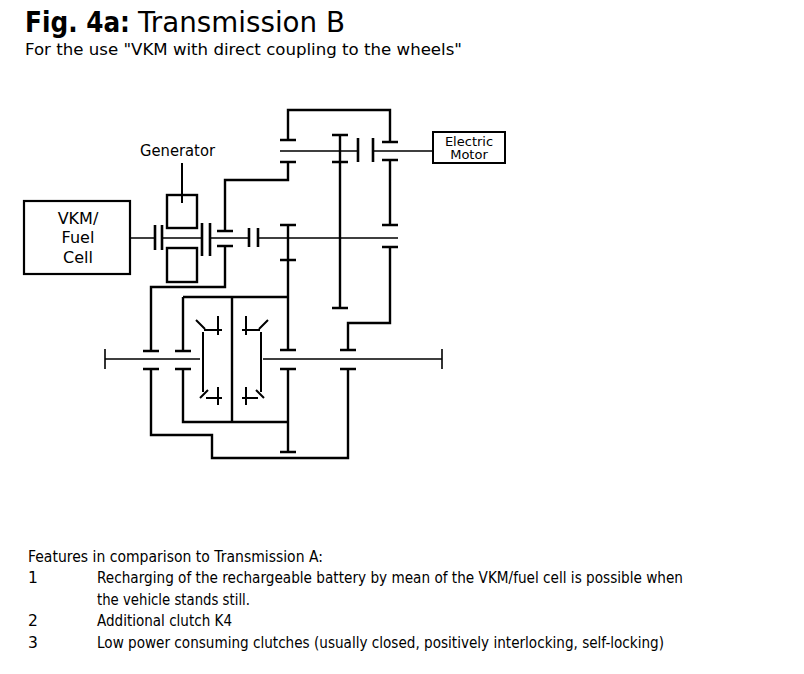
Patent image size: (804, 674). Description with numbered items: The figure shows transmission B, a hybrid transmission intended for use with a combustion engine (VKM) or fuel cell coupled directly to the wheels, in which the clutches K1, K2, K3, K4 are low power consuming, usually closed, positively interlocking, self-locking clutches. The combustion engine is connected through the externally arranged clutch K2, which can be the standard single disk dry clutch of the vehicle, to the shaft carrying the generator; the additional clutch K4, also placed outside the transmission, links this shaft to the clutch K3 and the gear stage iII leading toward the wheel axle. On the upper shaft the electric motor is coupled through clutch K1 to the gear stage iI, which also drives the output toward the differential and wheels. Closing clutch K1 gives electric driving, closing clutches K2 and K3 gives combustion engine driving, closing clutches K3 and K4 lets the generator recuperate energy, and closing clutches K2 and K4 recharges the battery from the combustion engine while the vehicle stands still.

The clutch K1 is at (370, 139).
The clutch K2 is at (149, 223).
The clutch K3 is at (253, 222).
The clutch K4 is at (214, 226).
The gear ratio i_I iI is at (352, 175).
The gear ratio i_II iII is at (301, 258).